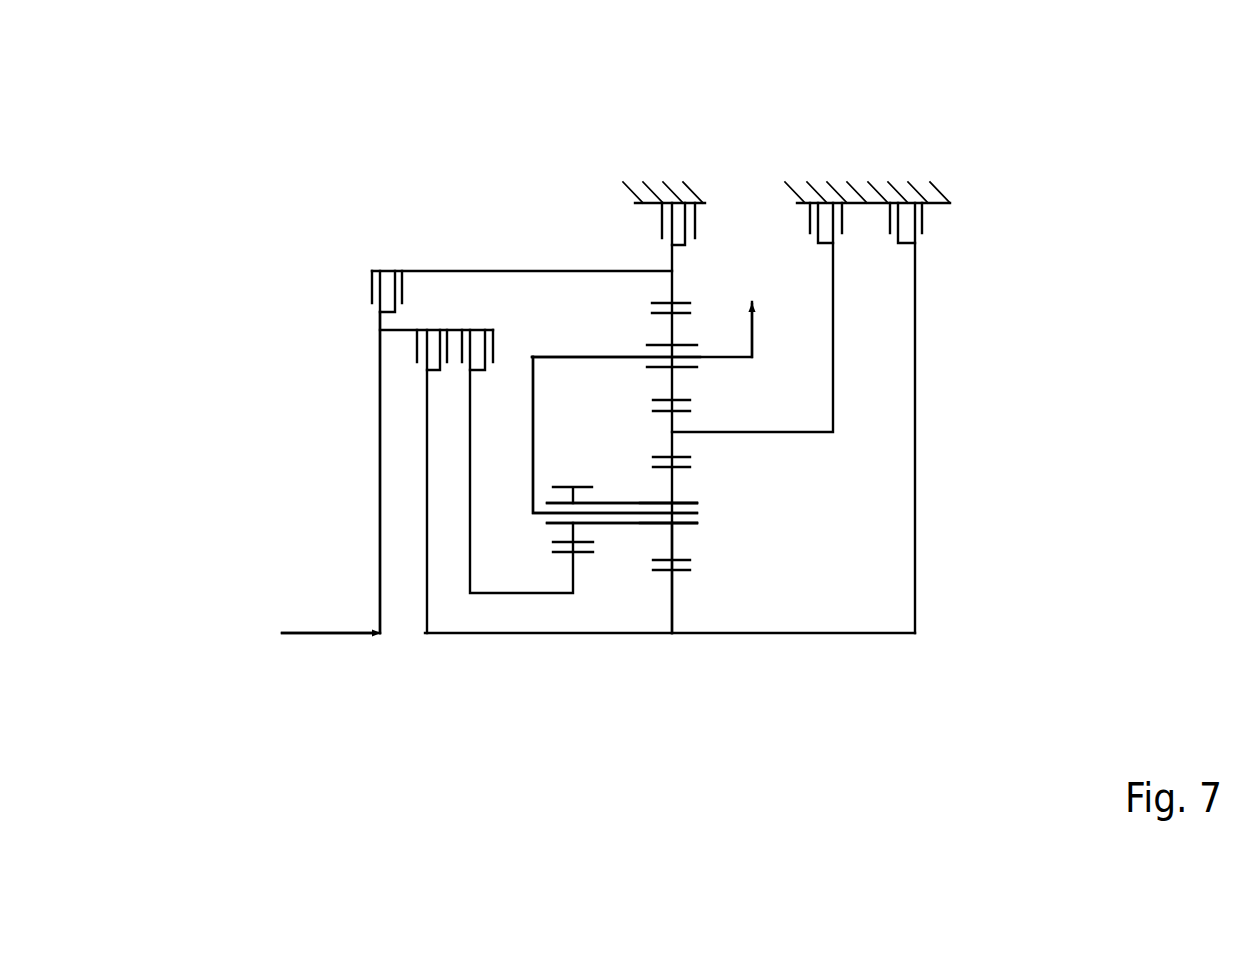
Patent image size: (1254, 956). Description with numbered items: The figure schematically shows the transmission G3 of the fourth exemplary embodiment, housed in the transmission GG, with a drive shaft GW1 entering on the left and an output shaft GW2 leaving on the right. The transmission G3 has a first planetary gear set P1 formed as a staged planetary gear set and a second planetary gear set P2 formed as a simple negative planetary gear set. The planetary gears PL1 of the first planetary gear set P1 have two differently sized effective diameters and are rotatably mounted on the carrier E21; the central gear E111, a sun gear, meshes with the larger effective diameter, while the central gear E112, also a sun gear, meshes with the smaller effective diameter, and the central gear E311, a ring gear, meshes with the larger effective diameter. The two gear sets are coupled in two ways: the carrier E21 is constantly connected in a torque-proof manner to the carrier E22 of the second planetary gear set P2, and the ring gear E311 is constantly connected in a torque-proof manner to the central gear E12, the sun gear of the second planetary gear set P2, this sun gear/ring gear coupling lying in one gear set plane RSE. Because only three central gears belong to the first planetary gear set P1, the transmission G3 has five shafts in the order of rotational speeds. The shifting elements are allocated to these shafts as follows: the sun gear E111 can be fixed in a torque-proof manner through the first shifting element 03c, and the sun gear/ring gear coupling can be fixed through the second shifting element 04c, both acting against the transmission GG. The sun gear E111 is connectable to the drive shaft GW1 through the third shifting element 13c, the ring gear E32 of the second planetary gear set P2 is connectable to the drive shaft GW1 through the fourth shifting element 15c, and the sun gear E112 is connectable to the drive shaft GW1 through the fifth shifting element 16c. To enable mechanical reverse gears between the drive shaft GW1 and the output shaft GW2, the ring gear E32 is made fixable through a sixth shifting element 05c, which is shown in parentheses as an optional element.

The fifth shifting element 16c is at (476, 319).
The central gear of the first planetary gear set E311 is at (660, 453).
The second planetary gear set P2 is at (651, 342).
The sixth shifting element 05c is at (650, 231).
The gear set plane RSE is at (672, 171).
The central gear of the second planetary gear set E32 is at (680, 298).
The transmission GG is at (878, 187).
The first shifting element 03c is at (930, 225).
The second shifting element 04c is at (850, 239).
The output shaft GW2 is at (753, 338).
The carrier of the second planetary gear set E22 is at (733, 360).
The central gear of the second planetary gear set E12 is at (683, 413).
The fourth shifting element 15c is at (361, 289).
The third shifting element 13c is at (405, 358).
The transmission G3 is at (318, 468).
The drive shaft GW1 is at (362, 635).
The carrier of the first planetary gear set E21 is at (542, 517).
The central gear of the first planetary gear set E112 is at (583, 555).
The planetary gears of the first planetary gear set PL1 is at (660, 543).
The central gear of the first planetary gear set E111 is at (660, 575).
The first planetary gear set P1 is at (692, 530).